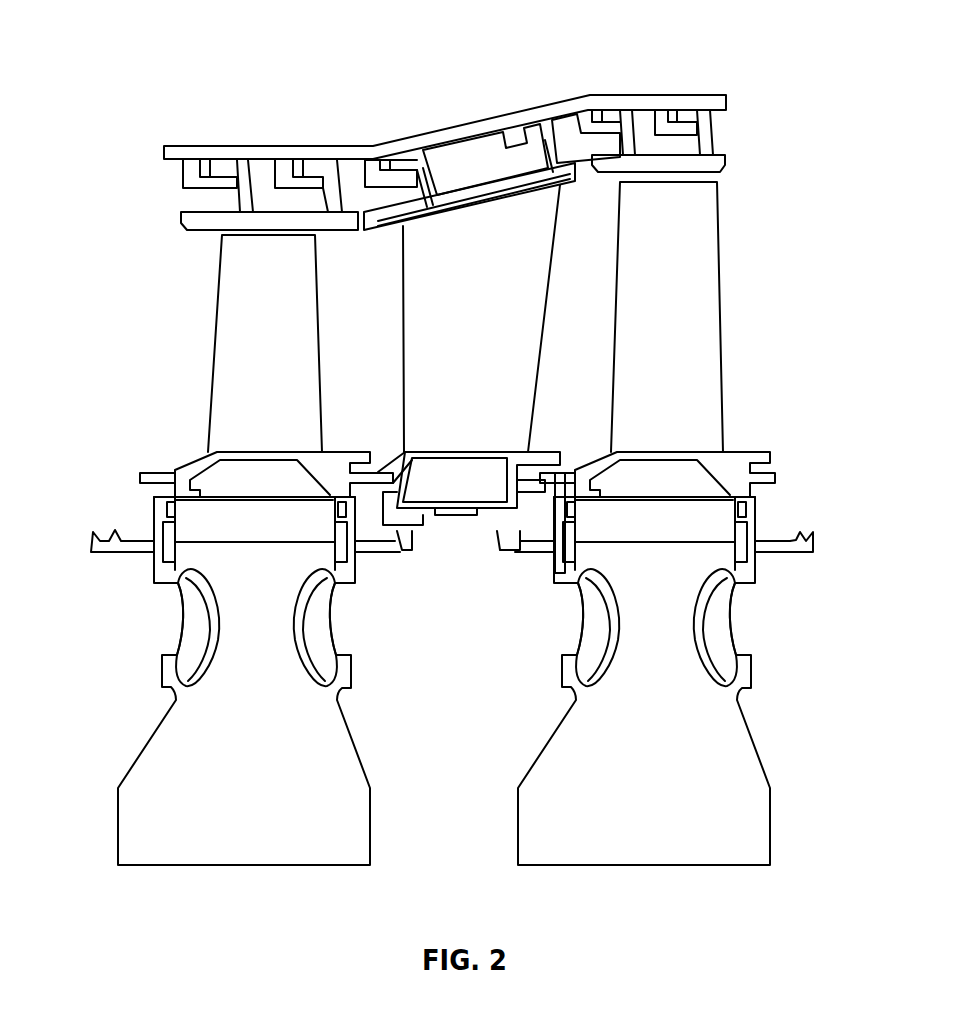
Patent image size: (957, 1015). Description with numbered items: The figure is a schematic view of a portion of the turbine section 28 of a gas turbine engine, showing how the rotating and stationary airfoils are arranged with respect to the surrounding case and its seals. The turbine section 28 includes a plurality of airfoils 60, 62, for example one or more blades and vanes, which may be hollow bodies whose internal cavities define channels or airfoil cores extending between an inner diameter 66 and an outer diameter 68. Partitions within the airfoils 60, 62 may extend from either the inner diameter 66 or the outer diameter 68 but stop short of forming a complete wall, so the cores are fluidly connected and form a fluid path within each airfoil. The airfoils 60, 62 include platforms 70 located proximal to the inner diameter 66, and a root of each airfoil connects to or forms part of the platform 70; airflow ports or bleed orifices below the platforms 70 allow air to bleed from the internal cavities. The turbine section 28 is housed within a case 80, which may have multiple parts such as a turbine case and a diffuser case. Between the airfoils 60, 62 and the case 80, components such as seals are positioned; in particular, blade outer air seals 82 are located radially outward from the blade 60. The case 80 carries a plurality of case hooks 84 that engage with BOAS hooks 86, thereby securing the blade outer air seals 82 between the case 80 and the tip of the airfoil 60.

The turbine section 28 is at (130, 52).
The airfoil (blade) 60 is at (303, 278).
The airfoil (vane) 62 is at (520, 263).
The inner diameter 66 is at (783, 449).
The outer diameter 68 is at (182, 258).
The platform 70 is at (543, 457).
The case 80 is at (472, 132).
The blade outer air seal (BOAS) 82 is at (254, 222).
The case hook 84 is at (312, 183).
The BOAS hook 86 is at (242, 175).